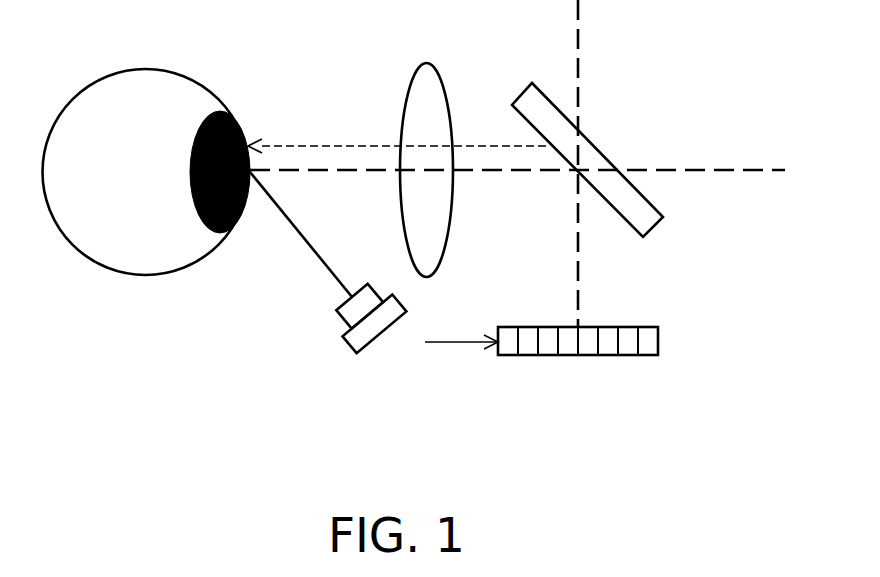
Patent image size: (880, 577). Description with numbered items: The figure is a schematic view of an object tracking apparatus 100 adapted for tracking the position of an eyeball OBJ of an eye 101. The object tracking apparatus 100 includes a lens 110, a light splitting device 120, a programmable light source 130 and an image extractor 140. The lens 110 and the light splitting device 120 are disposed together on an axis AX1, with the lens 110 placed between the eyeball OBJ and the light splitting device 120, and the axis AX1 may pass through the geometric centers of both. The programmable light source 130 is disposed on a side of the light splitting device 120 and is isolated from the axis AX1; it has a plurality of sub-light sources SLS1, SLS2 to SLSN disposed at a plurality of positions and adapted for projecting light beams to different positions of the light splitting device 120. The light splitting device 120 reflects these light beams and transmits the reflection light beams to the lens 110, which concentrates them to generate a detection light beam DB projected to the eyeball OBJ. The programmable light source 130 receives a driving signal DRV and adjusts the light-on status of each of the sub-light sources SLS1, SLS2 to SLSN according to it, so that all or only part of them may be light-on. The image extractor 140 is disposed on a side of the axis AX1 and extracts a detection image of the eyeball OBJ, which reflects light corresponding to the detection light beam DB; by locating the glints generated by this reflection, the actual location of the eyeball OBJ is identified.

The object tracking apparatus 100 is at (828, 453).
The eye 101 is at (93, 82).
The eyeball OBJ is at (200, 120).
The lens 110 is at (440, 78).
The light splitting device 120 is at (538, 88).
The programmable light source 130 is at (658, 340).
The image extractor 140 is at (357, 338).
The detection light beam DB is at (332, 144).
The driving signal DRV is at (461, 326).
The axis AX1 is at (747, 167).
The sub-light source SLS1 is at (507, 348).
The sub-light source SLS2 is at (530, 348).
The sub-light source SLSN is at (647, 348).